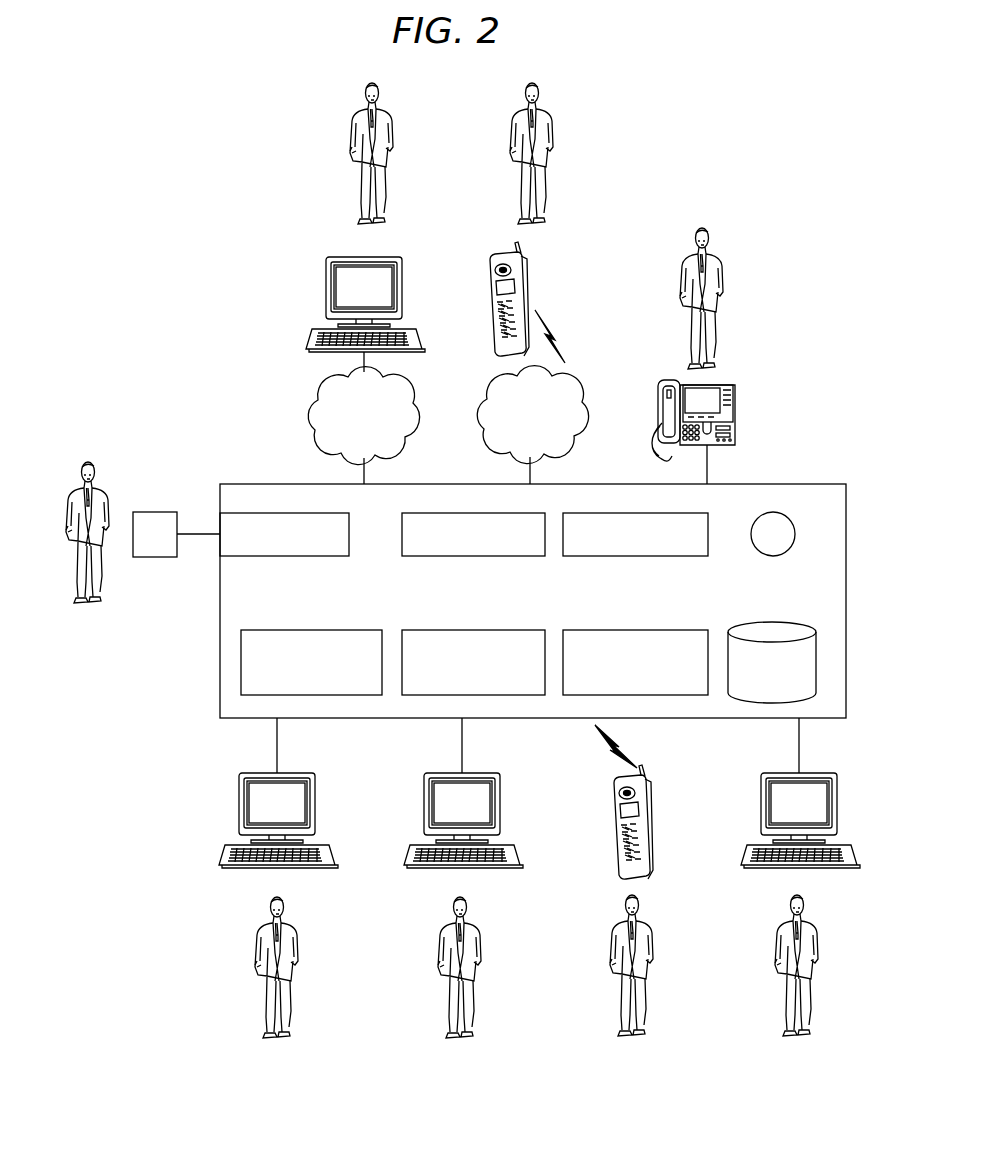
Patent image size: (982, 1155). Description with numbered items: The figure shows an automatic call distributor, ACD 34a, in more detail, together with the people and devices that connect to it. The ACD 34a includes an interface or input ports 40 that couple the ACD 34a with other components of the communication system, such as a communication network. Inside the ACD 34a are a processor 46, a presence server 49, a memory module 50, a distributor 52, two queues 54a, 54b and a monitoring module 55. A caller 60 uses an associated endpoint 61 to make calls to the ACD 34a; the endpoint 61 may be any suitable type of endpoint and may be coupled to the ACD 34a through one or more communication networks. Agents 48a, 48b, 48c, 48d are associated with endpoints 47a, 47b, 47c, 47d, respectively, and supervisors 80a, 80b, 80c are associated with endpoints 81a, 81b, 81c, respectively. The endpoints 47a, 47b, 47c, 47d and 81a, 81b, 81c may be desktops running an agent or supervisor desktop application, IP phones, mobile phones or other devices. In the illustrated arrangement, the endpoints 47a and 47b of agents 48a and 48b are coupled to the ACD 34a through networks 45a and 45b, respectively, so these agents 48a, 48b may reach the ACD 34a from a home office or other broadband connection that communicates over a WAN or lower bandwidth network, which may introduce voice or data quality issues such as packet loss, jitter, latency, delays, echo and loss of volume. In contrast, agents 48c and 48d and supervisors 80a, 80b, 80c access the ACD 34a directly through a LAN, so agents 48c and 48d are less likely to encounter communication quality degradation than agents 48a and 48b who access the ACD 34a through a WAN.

The ACD 34a is at (218, 647).
The interface or input ports 40 is at (272, 557).
The network 45a is at (380, 428).
The network 45b is at (548, 428).
The processor 46 is at (762, 557).
The endpoint 47a is at (327, 288).
The endpoint 47b is at (488, 292).
The endpoint 47c is at (740, 426).
The endpoint 47d is at (240, 805).
The agent 48a is at (352, 133).
The agent 48b is at (512, 133).
The agent 48c is at (722, 276).
The agent 48d is at (258, 987).
The presence server 49 is at (494, 630).
The memory module 50 is at (794, 623).
The distributor 52 is at (320, 630).
The queue 54a is at (448, 557).
The queue 54b is at (612, 557).
The monitoring module 55 is at (657, 630).
The caller 60 is at (68, 512).
The endpoint 61 is at (156, 512).
The supervisor 80a is at (441, 987).
The supervisor 80b is at (647, 985).
The supervisor 80c is at (812, 985).
The endpoint 81a is at (425, 805).
The endpoint 81b is at (655, 830).
The endpoint 81c is at (835, 805).